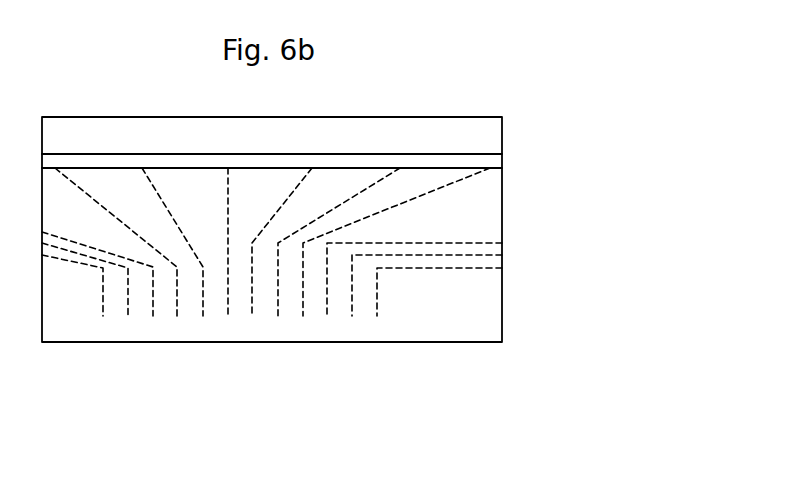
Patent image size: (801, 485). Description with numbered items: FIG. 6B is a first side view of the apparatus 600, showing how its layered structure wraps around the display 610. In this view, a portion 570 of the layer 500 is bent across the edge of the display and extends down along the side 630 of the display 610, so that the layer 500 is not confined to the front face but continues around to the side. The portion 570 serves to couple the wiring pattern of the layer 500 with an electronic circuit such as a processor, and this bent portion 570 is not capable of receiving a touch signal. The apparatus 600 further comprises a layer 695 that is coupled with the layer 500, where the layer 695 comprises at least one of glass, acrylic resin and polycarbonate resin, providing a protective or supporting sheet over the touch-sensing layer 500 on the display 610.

The apparatus 600 is at (412, 240).
The layer 695 is at (504, 135).
The layer 500 is at (504, 162).
The display 610 is at (504, 200).
The side 630 is at (349, 295).
The portion 570 is at (457, 272).